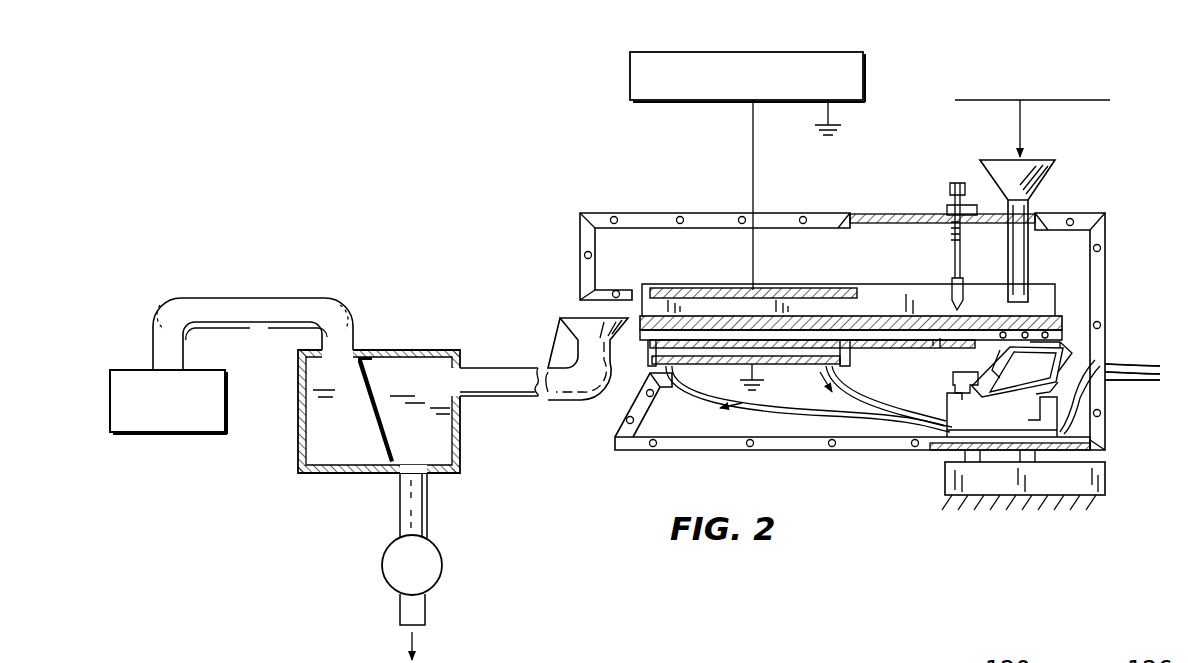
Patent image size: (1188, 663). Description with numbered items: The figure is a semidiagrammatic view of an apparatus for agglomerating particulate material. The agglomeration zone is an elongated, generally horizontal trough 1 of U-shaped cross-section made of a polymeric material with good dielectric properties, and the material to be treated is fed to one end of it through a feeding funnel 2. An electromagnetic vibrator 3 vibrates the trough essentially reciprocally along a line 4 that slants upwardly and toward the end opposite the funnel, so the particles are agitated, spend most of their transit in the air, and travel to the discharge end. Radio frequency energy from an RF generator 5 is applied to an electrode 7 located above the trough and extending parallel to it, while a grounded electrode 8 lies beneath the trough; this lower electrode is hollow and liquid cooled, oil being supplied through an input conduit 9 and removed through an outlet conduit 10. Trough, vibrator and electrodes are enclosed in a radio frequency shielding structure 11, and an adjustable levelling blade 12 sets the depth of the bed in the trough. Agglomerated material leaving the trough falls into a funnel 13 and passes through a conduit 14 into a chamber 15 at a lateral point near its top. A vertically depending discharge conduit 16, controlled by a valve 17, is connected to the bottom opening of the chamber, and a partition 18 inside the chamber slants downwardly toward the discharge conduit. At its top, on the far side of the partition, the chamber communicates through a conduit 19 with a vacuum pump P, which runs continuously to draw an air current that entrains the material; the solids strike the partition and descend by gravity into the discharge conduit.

The trough 1 is at (1046, 292).
The feeding funnel 2 is at (1050, 180).
The electromagnetic vibrator 3 is at (950, 366).
The line of vibration 4 is at (1006, 396).
The RF generator 5 is at (862, 52).
The electrode 7 is at (816, 292).
The grounded electrode 8 is at (855, 352).
The input conduit 9 is at (780, 420).
The outlet conduit 10 is at (868, 402).
The radio frequency shielding structure 11 is at (642, 207).
The adjustable levelling blade 12 is at (950, 300).
The funnel 13 is at (557, 330).
The conduit 14 is at (578, 402).
The chamber 15 is at (388, 350).
The discharge conduit 16 is at (430, 512).
The valve 17 is at (442, 565).
The partition 18 is at (378, 420).
The conduit 19 is at (263, 298).
The vacuum pump P is at (110, 410).